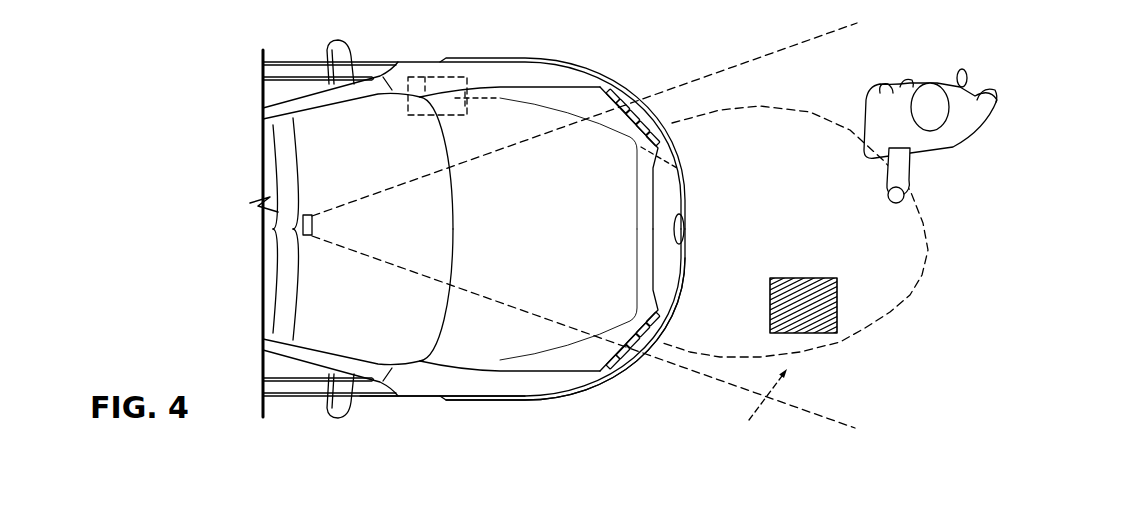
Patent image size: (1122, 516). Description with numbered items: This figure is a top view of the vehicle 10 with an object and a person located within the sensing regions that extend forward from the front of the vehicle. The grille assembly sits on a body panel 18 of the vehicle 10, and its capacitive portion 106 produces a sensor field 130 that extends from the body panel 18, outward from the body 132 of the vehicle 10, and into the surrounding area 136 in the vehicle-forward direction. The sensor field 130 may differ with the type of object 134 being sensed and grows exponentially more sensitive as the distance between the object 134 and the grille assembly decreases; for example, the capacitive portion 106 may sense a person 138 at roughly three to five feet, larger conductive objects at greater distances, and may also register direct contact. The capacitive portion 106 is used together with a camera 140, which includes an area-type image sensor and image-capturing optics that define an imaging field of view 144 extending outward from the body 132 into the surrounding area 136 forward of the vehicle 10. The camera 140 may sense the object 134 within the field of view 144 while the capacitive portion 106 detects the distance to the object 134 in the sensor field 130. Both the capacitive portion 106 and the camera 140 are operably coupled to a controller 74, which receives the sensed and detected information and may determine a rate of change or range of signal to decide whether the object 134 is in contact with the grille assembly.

The vehicle 10 is at (203, 128).
The body panel 18 is at (580, 402).
The controller 74 is at (425, 76).
The capacitive portion 106 is at (674, 182).
The sensor field 130 is at (872, 247).
The body 132 is at (408, 404).
The object 134 is at (836, 318).
The surrounding area 136 is at (845, 392).
The person 138 is at (968, 122).
The camera 140 is at (302, 228).
The field of view 144 is at (763, 408).